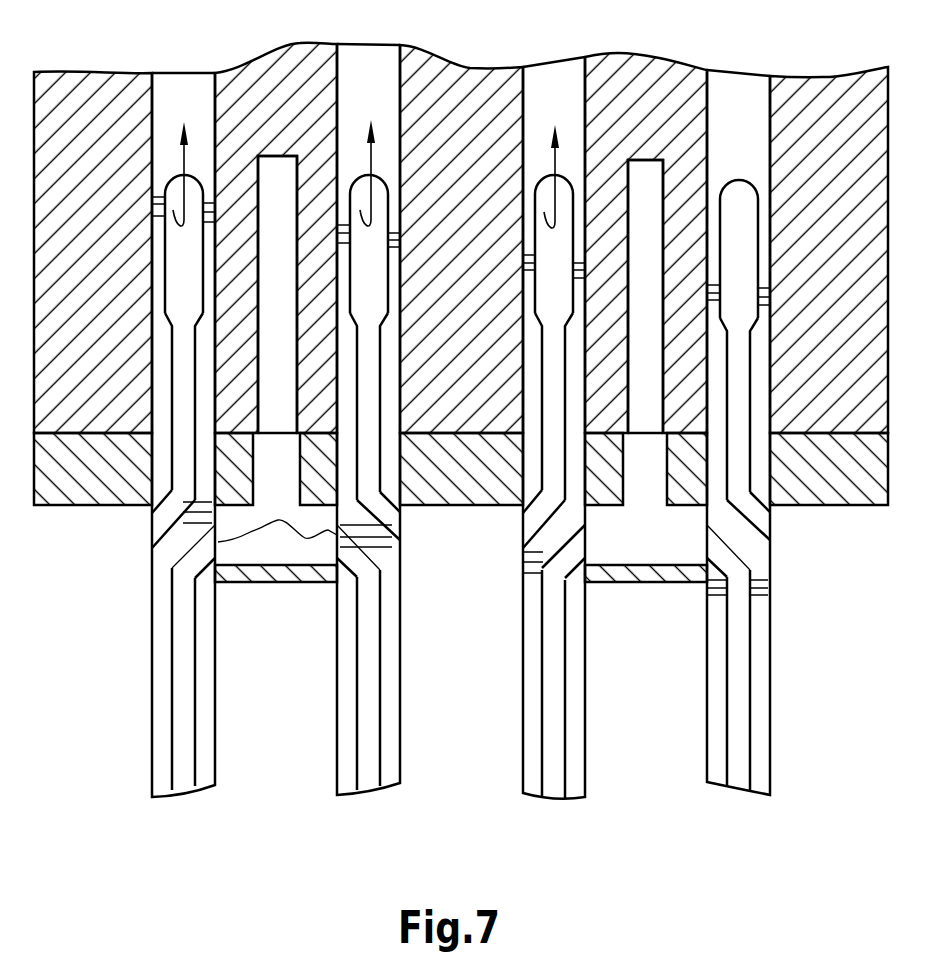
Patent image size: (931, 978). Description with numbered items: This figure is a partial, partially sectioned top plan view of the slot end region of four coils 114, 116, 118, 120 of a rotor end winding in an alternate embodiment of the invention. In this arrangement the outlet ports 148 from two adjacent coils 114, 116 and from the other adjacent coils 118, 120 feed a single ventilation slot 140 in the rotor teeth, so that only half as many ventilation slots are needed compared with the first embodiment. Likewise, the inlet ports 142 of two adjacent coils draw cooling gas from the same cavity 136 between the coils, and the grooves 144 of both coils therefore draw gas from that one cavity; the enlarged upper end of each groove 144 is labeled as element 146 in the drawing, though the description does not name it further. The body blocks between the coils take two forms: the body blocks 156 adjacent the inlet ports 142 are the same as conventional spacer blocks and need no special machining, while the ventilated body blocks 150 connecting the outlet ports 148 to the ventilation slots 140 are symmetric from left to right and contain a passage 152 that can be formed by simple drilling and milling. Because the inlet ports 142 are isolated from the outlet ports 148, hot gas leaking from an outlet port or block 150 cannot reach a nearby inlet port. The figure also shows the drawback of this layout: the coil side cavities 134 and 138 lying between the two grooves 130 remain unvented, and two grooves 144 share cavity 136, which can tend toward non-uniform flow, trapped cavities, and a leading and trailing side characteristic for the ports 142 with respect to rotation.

The coil 114 is at (207, 757).
The coil 116 is at (343, 758).
The coil 118 is at (525, 755).
The coil 120 is at (705, 742).
The groove 130 is at (743, 725).
The coil side cavity 134 is at (288, 693).
The cavity 136 is at (480, 702).
The coil side cavity 138 is at (653, 707).
The ventilation slot 140 is at (298, 203).
The inlet port 142 is at (160, 527).
The groove 144 is at (553, 358).
The head 146 is at (745, 265).
The outlet port 148 is at (277, 519).
The ventilated body block 150 is at (272, 582).
The passage 152 is at (295, 557).
The body block 156 is at (472, 498).